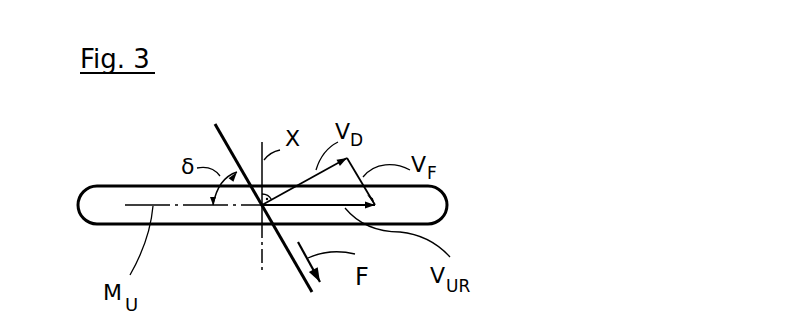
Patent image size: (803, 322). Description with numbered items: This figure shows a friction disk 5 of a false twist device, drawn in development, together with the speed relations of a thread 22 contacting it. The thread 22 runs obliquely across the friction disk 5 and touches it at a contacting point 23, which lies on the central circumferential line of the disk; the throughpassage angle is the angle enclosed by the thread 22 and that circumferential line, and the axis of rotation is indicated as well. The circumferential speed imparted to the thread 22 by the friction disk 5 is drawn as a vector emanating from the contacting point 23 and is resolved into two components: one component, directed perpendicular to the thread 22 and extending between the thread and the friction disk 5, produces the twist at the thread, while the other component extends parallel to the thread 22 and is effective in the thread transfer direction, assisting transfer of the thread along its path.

The friction disk 5 is at (436, 199).
The thread 22 is at (224, 138).
The contacting point 23 is at (262, 208).